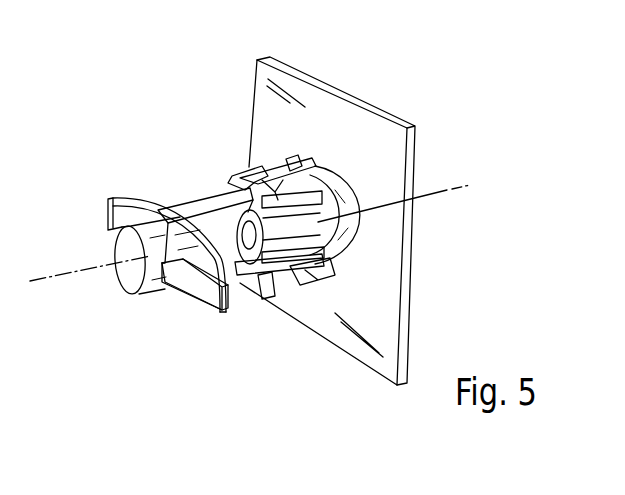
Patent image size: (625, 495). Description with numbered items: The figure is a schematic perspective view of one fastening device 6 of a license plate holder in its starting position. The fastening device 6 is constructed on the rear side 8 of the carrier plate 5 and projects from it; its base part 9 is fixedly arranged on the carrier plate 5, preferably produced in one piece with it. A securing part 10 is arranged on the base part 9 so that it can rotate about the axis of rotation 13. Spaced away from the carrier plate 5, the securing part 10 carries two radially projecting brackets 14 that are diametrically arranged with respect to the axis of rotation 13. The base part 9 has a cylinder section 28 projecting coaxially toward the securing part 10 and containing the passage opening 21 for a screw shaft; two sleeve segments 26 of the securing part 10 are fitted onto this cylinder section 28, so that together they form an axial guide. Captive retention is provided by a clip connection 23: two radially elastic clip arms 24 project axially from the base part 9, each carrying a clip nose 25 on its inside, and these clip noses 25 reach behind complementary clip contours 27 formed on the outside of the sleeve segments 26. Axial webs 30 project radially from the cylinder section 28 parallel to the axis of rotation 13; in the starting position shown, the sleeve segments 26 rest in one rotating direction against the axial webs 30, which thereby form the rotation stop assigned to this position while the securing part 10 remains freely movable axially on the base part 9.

The carrier plate 5 is at (383, 133).
The fastening device 6 is at (372, 251).
The rear side 8 is at (288, 88).
The base part 9 is at (347, 195).
The securing part 10 is at (166, 197).
The axis of rotation 13 is at (447, 190).
The bracket 14 is at (110, 207).
The passage opening 21 is at (252, 268).
The clip connection 23 is at (233, 158).
The clip arm 24 is at (277, 170).
The clip nose 25 is at (248, 170).
The sleeve segment 26 is at (200, 203).
The clip contour 27 is at (228, 183).
The cylinder section 28 is at (312, 270).
The axial web 30 is at (307, 193).